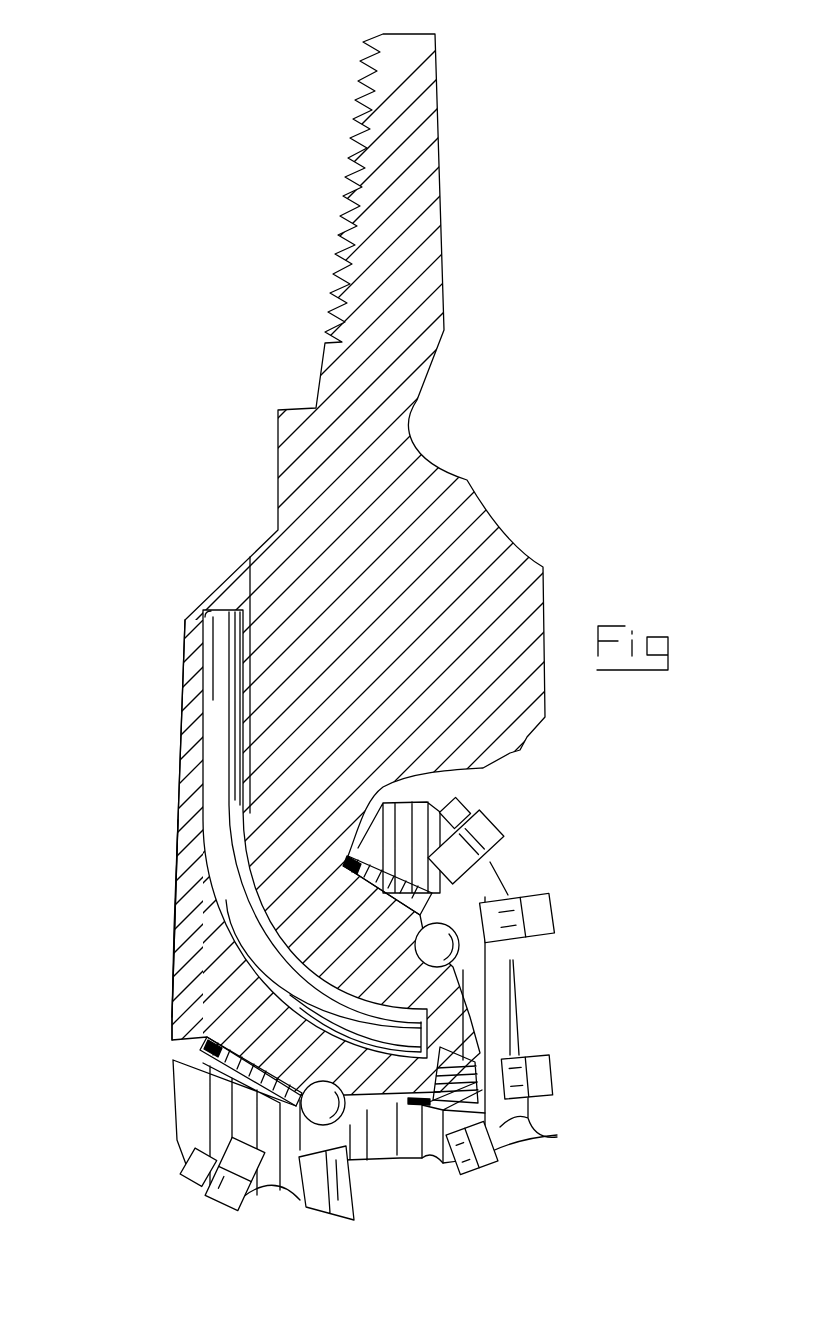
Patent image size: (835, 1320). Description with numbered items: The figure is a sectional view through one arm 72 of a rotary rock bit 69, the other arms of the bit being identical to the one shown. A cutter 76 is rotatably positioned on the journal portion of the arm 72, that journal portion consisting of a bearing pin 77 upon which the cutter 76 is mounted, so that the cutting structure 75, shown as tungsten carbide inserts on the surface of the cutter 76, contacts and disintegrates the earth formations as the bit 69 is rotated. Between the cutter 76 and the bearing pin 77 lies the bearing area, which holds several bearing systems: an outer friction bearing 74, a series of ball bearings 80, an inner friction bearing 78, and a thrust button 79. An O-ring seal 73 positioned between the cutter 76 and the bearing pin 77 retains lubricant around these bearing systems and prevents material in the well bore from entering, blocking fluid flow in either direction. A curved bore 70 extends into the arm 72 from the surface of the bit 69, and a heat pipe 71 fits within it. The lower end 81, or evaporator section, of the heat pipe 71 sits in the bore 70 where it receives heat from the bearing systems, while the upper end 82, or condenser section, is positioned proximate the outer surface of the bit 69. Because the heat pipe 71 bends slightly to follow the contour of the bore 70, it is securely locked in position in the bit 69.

The rotary rock bit 69 is at (186, 444).
The bore 70 is at (210, 732).
The heat pipe 71 is at (223, 841).
The arm 72 is at (176, 957).
The O-ring seal 73 is at (205, 1048).
The outer friction bearing 74 is at (188, 1082).
The cutting structure 75 is at (458, 828).
The cutter 76 is at (433, 1143).
The bearing pin 77 is at (423, 990).
The inner friction bearing 78 is at (470, 1003).
The thrust button 79 is at (483, 1047).
The ball bearings 80 is at (498, 877).
The lower end (evaporator section) 81 is at (408, 1033).
The upper end (condenser section) 82 is at (220, 636).